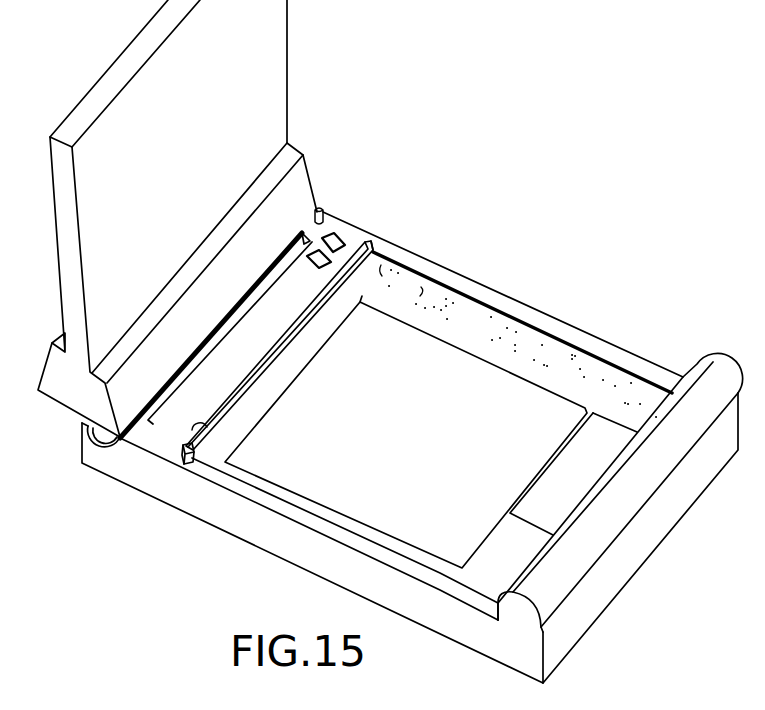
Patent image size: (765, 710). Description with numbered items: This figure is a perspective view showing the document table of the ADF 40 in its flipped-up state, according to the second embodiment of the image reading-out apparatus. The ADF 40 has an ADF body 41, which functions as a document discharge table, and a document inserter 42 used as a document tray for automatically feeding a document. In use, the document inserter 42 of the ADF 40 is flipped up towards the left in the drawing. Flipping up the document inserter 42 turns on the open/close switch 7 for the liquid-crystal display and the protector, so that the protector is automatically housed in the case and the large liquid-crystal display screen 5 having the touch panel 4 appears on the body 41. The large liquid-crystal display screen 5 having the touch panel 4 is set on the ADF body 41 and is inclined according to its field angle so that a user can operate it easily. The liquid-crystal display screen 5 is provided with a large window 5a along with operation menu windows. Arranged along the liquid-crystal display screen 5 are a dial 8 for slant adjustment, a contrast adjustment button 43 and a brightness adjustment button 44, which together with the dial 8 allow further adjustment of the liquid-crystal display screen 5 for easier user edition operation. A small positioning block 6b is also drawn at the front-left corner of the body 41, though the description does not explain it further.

The ADF 40 is at (525, 165).
The document inserter 42 is at (265, 82).
The ADF body 41 is at (503, 302).
The touch panel 4 is at (598, 442).
The large window 5a is at (275, 478).
The large liquid-crystal display screen 5 is at (455, 300).
The open/close switch 7 is at (328, 208).
The contrast adjustment button 43 is at (340, 243).
The brightness adjustment button 44 is at (357, 237).
The dial for slant adjustment 8 is at (192, 430).
The positioning block 6b is at (187, 450).